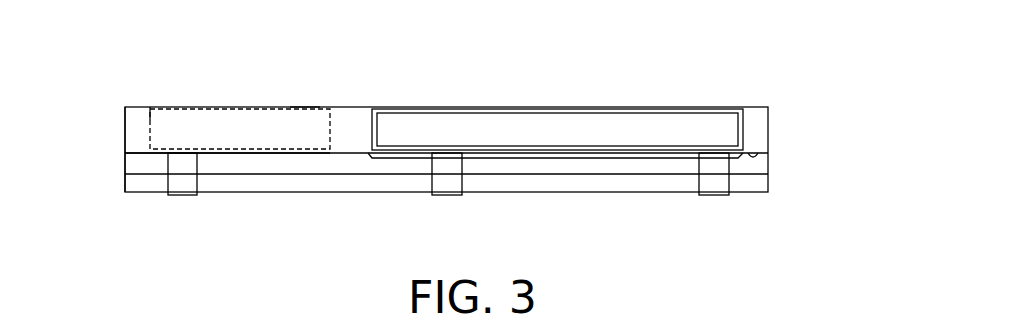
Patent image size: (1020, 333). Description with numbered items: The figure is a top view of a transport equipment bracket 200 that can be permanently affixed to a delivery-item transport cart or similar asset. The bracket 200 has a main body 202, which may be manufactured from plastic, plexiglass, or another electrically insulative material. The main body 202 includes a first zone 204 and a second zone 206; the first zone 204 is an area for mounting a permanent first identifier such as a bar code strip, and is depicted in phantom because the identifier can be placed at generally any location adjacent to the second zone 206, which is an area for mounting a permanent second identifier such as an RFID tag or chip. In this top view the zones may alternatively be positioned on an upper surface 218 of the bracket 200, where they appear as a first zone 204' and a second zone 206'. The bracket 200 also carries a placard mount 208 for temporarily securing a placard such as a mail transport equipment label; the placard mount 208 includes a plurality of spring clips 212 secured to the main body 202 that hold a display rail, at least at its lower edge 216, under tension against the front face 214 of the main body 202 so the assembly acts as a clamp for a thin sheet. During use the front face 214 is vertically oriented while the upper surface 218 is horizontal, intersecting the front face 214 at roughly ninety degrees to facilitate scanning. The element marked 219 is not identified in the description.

The transport equipment bracket 200 is at (420, 80).
The main body 202 is at (756, 153).
The first zone 204 is at (227, 202).
The first zone 204' is at (240, 102).
The second zone 206 is at (555, 202).
The second zone 206' is at (557, 103).
The placard mount 208 is at (108, 175).
The spring clips 212 is at (182, 195).
The front face 214 is at (347, 162).
The lower edge 216 is at (140, 197).
The upper surface 218 is at (305, 105).
The corner / edge of housing 219 is at (165, 108).